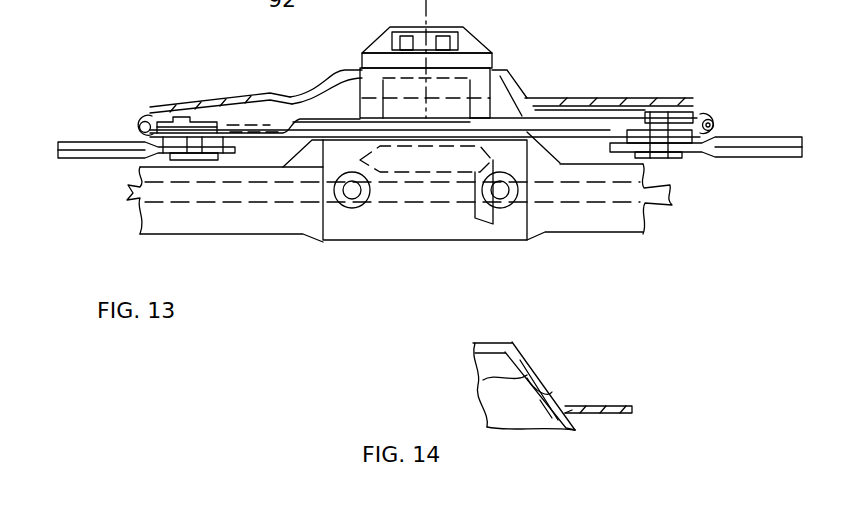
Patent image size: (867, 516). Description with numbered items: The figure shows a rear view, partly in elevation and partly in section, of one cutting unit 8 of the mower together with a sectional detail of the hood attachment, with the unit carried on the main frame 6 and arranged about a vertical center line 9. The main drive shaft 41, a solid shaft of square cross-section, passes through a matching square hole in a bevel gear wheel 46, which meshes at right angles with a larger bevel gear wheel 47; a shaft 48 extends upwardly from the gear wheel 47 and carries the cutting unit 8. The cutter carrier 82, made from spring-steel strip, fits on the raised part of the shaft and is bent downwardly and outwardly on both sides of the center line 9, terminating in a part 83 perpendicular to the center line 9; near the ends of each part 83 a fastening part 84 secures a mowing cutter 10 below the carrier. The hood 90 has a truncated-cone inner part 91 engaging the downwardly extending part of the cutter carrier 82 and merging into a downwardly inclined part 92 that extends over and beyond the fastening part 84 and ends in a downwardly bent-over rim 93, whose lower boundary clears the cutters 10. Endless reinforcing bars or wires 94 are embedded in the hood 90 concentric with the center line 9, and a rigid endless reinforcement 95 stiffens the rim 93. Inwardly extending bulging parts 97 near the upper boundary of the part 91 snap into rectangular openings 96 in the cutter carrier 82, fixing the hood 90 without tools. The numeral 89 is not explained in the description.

In FIG. 13, the main frame 6 is at (263, 235).
In FIG. 13, the cutting unit 8 is at (453, 82).
In FIG. 13, the center line 9 is at (425, 13).
In FIG. 13, the mowing cutter 10 is at (87, 143).
In FIG. 13, the main drive shaft 41 is at (661, 200).
In FIG. 13, the bevel gear wheel 46 is at (483, 218).
In FIG. 13, the bevel gear wheel 47 is at (396, 170).
In FIG. 13, the shaft 48 is at (432, 32).
In FIG. 13, the cutter carrier 82 is at (292, 140).
In FIG. 14, the cutter carrier 82 is at (467, 343).
In FIG. 13, the part of the cutter carrier 83 is at (563, 126).
In FIG. 13, the fastening part 84 is at (683, 162).
In FIG. 13, the knob 89 is at (375, 50).
In FIG. 13, the hood 90 is at (595, 98).
In FIG. 14, the hood 90 is at (625, 405).
In FIG. 13, the inner part 91 is at (345, 94).
In FIG. 14, the inner part 91 is at (553, 400).
In FIG. 13, the downwardly inclined part 92 is at (285, 97).
In FIG. 14, the downwardly inclined part 92 is at (593, 415).
In FIG. 13, the bent-over rim 93 is at (147, 118).
In FIG. 13, the reinforcing bars or wires 94 is at (648, 100).
In FIG. 13, the reinforcement 95 is at (717, 120).
In FIG. 14, the rectangular opening 96 is at (487, 382).
In FIG. 14, the bulging part 97 is at (533, 372).